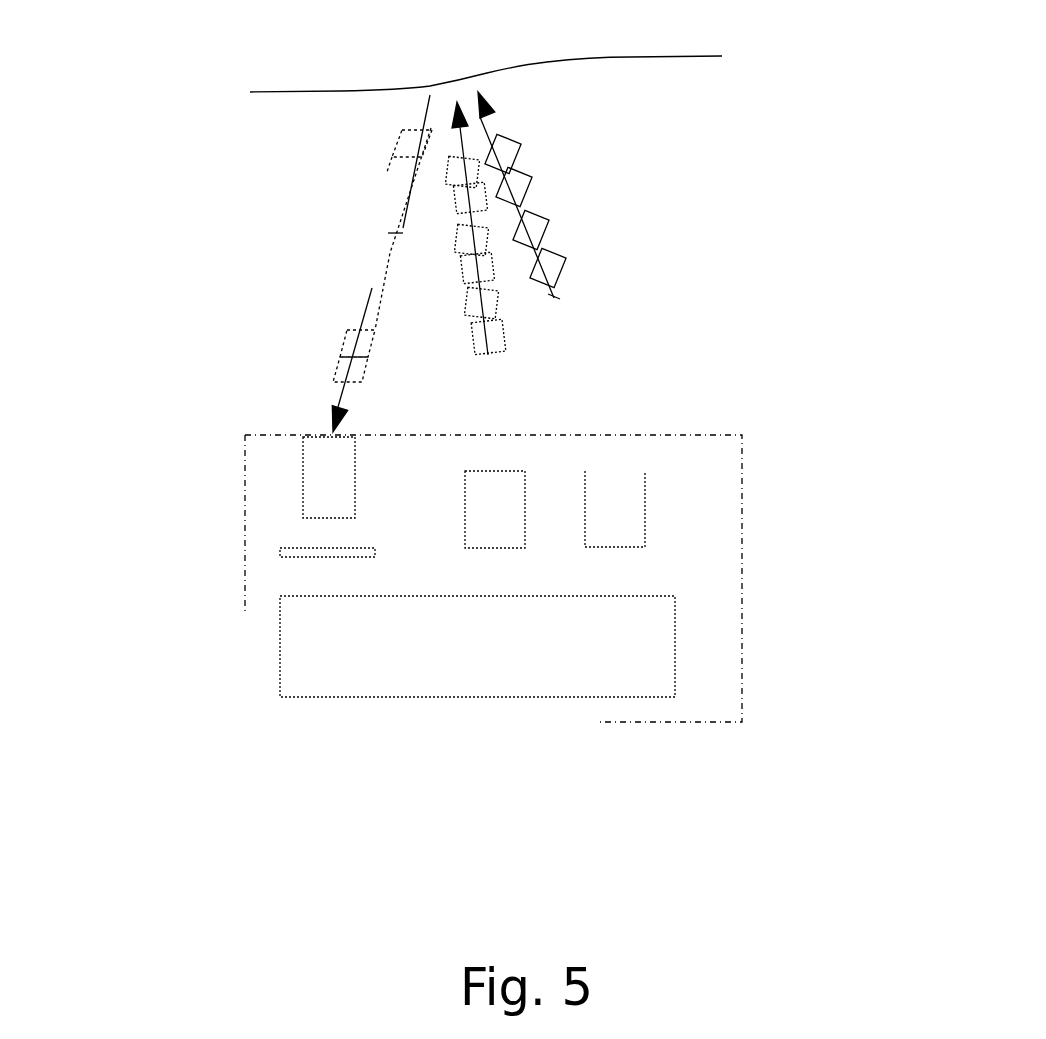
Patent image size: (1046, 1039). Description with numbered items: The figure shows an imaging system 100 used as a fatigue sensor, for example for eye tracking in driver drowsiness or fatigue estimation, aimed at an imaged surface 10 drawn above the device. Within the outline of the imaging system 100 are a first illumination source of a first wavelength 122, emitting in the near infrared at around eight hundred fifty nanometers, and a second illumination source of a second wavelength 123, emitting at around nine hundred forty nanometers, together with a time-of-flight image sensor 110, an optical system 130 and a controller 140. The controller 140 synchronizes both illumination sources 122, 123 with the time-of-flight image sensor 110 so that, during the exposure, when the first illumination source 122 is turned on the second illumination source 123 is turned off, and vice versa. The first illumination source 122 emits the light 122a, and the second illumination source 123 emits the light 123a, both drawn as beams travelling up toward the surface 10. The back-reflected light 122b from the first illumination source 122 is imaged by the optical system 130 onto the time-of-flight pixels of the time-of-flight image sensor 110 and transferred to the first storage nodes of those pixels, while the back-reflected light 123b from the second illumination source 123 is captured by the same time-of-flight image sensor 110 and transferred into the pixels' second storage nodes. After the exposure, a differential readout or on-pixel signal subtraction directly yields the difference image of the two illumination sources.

The skin surface 10 is at (510, 92).
The imaging system 100 is at (497, 750).
The time-of-flight image sensor 110 is at (255, 553).
The first illumination source of a first wavelength 122 is at (520, 561).
The light 122a is at (500, 417).
The back-reflected light 122b is at (368, 212).
The second illumination source of a second wavelength 123 is at (671, 507).
The light 123a is at (625, 473).
The back-reflected light 123b is at (335, 382).
The optical system 130 is at (278, 478).
The controller 140 is at (463, 715).